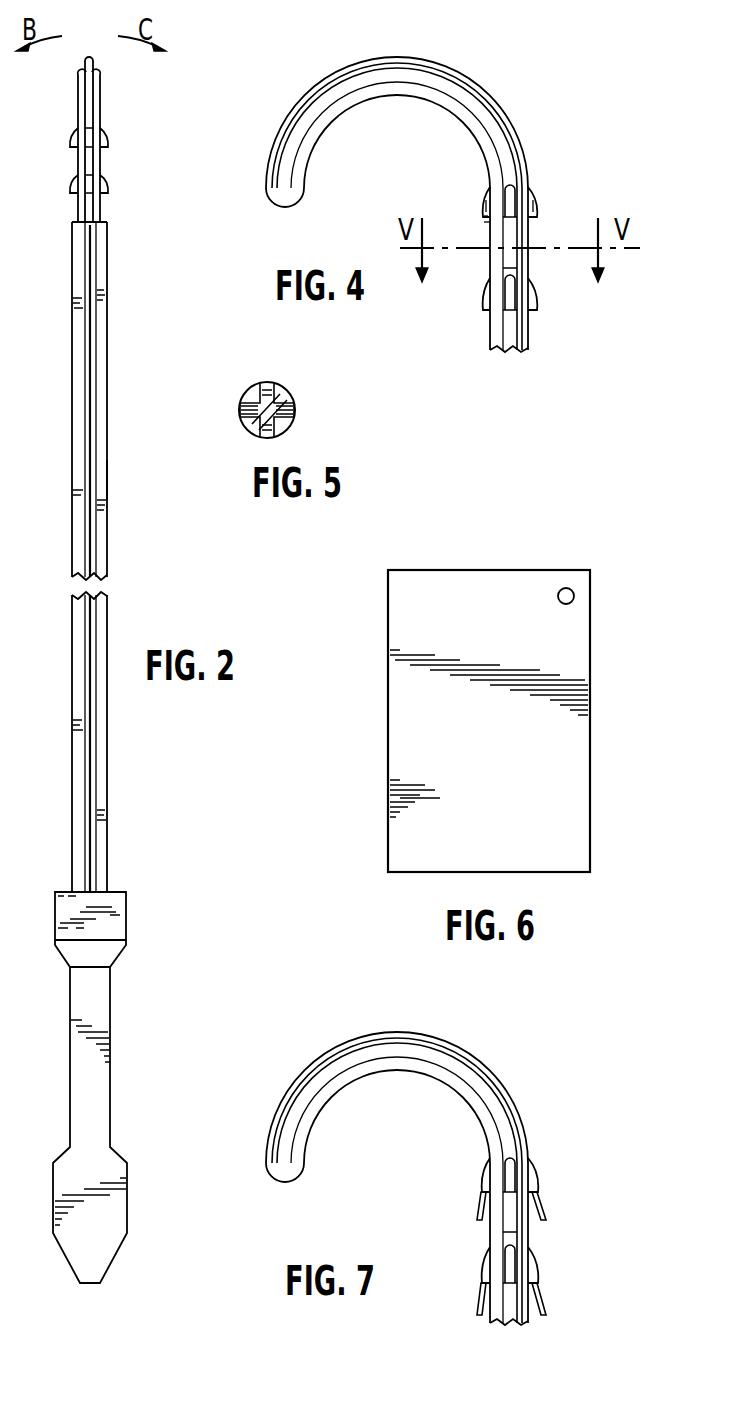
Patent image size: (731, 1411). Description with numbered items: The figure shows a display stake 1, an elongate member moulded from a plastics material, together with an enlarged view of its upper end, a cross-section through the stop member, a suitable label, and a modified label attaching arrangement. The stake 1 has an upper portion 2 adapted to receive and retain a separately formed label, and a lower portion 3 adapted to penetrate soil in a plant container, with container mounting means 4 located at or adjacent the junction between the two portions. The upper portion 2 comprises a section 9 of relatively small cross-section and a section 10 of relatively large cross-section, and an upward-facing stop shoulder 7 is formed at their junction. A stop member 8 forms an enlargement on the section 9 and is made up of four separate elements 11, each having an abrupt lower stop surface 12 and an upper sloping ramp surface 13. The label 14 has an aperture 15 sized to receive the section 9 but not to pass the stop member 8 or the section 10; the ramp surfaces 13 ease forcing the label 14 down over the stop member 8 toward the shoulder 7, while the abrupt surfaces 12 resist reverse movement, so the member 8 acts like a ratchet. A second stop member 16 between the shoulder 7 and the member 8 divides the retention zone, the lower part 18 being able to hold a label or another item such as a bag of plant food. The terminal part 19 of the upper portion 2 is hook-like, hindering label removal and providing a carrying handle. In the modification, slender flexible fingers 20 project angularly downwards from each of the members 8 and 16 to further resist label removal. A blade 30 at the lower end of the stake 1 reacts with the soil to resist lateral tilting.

In FIG. 2, the display stake 1 is at (113, 620).
In FIG. 2, the upper portion 2 is at (118, 480).
In FIG. 2, the lower portion 3 is at (97, 1079).
In FIG. 2, the container mounting means 4 is at (112, 927).
In FIG. 5, the stop shoulder 7 is at (246, 428).
In FIG. 2, the stop member 8 is at (114, 137).
In FIG. 4, the stop member 8 is at (543, 197).
In FIG. 5, the stop member 8 is at (290, 392).
In FIG. 7, the stop member 8 is at (472, 1178).
In FIG. 2, the section of relatively small cross-sectional size 9 is at (100, 162).
In FIG. 4, the section of relatively small cross-sectional size 9 is at (519, 268).
In FIG. 7, the section of relatively small cross-sectional size 9 is at (500, 1232).
In FIG. 2, the section of relatively large cross-sectional size 10 is at (96, 347).
In FIG. 4, the elements 11 is at (486, 206).
In FIG. 5, the elements 11 is at (250, 399).
In FIG. 4, the abrupt lower stop surface 12 is at (488, 224).
In FIG. 4, the upper sloping ramp surface 13 is at (488, 213).
In FIG. 6, the label 14 is at (408, 715).
In FIG. 6, the aperture 15 is at (562, 589).
In FIG. 2, the second stop member 16 is at (114, 184).
In FIG. 4, the second stop member 16 is at (472, 300).
In FIG. 7, the second stop member 16 is at (549, 1265).
In FIG. 2, the lower part 18 is at (114, 198).
In FIG. 2, the terminal part 19 is at (97, 88).
In FIG. 4, the terminal part 19 is at (432, 73).
In FIG. 7, the terminal part 19 is at (368, 1045).
In FIG. 7, the slender flexible finger 20 is at (479, 1208).
In FIG. 2, the blade 30 is at (74, 1226).